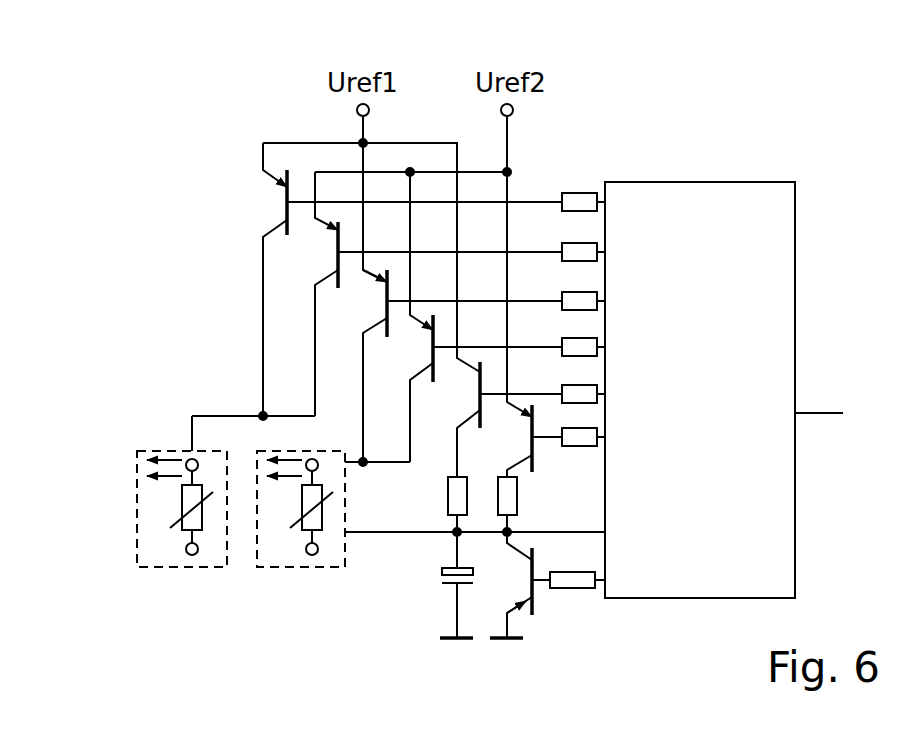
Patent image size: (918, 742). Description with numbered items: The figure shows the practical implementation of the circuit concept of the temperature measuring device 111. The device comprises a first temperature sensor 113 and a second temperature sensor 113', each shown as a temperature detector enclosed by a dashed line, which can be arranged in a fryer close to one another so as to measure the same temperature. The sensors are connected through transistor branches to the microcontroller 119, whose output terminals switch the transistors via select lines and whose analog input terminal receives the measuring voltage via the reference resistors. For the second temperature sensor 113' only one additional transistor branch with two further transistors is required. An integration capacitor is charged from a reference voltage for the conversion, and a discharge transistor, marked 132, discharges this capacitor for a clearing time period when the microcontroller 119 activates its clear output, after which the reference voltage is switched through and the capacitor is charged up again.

The temperature measuring device 111 is at (653, 112).
The microcontroller 119 is at (731, 182).
The first temperature sensor 113 is at (132, 509).
The second temperature sensor 113' is at (296, 559).
The clear transistor switch 132 is at (552, 624).